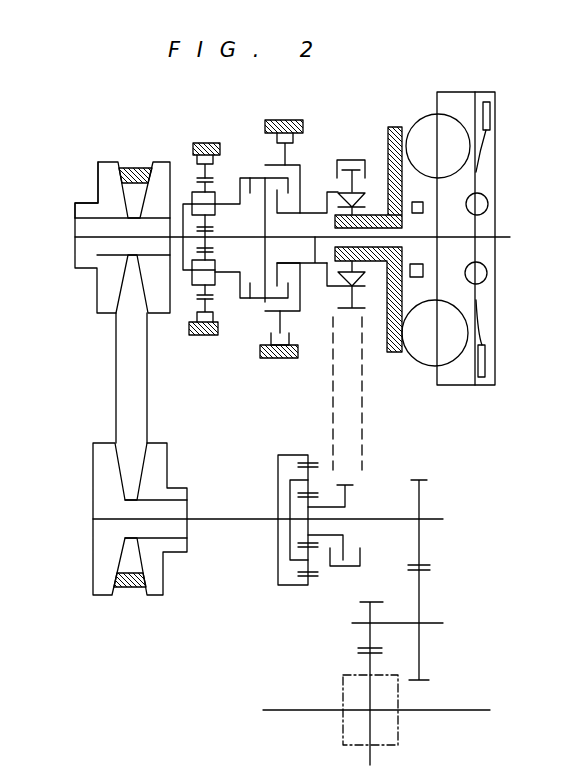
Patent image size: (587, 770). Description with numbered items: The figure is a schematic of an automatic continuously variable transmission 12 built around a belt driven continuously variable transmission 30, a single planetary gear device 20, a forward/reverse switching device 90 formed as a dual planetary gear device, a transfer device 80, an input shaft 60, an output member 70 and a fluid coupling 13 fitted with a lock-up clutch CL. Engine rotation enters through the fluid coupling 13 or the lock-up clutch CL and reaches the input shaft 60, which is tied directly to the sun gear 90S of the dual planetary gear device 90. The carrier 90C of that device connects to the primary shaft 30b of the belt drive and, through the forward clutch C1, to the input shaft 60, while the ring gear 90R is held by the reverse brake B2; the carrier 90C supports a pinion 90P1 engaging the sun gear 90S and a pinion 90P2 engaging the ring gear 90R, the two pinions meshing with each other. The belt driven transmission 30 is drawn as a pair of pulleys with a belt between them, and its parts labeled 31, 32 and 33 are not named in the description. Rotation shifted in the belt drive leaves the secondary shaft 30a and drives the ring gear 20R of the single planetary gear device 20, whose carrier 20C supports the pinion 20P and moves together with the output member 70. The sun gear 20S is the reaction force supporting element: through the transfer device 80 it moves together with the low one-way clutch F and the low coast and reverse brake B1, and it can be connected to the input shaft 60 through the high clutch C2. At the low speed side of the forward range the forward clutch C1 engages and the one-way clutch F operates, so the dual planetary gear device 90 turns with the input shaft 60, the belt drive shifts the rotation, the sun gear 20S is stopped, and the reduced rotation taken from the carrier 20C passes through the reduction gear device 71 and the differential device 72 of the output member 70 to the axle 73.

The automatic continuously variable transmission 12 is at (118, 98).
The fluid coupling 13 is at (429, 89).
The single planetary gear device 20 is at (257, 464).
The carrier 20C is at (290, 505).
The pinion 20P is at (310, 553).
The ring gear 20R is at (290, 587).
The sun gear 20S is at (348, 508).
The belt driven continuously variable transmission 30 is at (124, 151).
The secondary shaft 30a is at (205, 521).
The primary shaft 30b is at (104, 238).
The fixed sheave 31 is at (103, 178).
The secondary pulley 32 is at (97, 565).
The belt 33 is at (122, 588).
The input shaft 60 is at (316, 266).
The output member 70 is at (430, 616).
The reduction gear device 71 is at (430, 576).
The differential device 72 is at (404, 701).
The axle 73 is at (288, 710).
The transfer device 80 is at (375, 409).
The forward/reverse switching device 90 is at (172, 156).
The carrier 90C is at (183, 272).
The pinion 90P1 is at (191, 270).
The pinion 90P2 is at (192, 186).
The ring gear 90R is at (196, 179).
The sun gear 90S is at (212, 248).
The low coast & reverse brake B1 is at (284, 129).
The reverse brake B2 is at (204, 229).
The forward clutch C1 is at (267, 256).
The high clutch C2 is at (294, 178).
The low one-way clutch F is at (379, 239).
The lock-up clutch CL is at (450, 227).